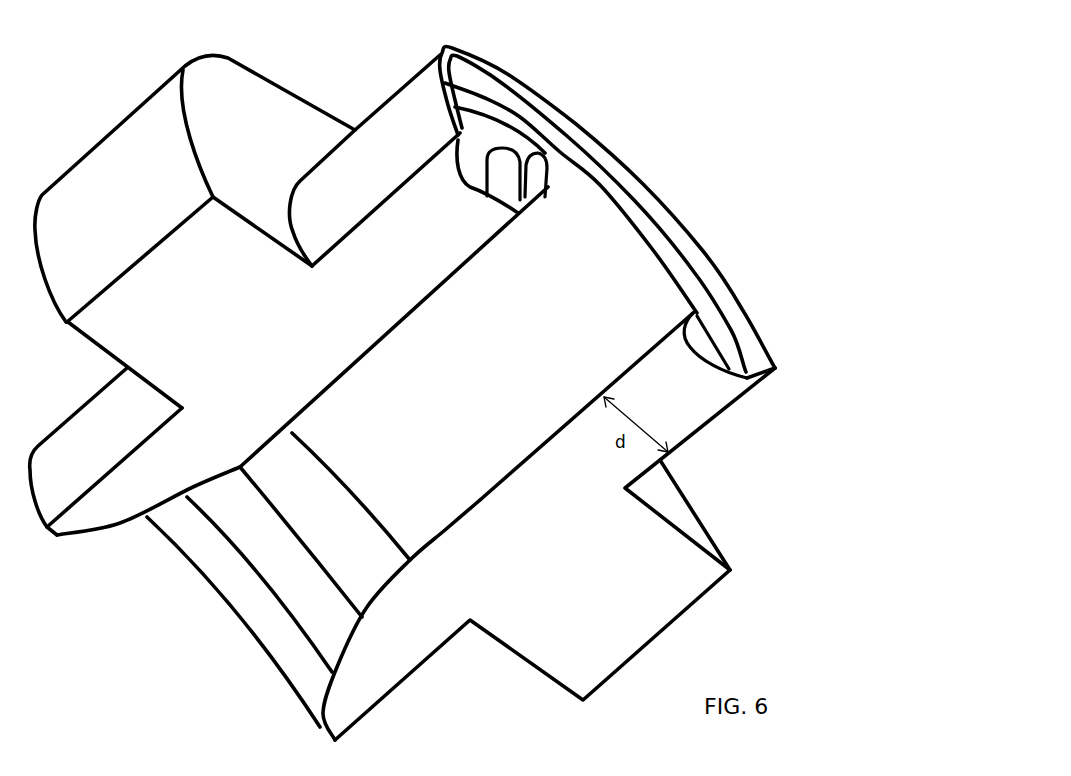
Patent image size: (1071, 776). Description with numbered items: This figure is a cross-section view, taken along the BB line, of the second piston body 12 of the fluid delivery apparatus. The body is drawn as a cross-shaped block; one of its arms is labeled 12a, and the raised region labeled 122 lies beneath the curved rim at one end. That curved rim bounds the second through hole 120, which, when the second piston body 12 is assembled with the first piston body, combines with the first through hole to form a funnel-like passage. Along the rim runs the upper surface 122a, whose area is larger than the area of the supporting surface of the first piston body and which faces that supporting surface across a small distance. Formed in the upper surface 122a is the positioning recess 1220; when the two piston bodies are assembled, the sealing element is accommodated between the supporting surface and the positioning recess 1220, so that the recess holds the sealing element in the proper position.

The second piston body 12 is at (745, 83).
The arm of connecting element 12a is at (197, 107).
The raised portion 122 is at (392, 128).
The positioning recess 1220 is at (503, 133).
The second through hole 120 is at (628, 262).
The upper surface 122a is at (720, 340).